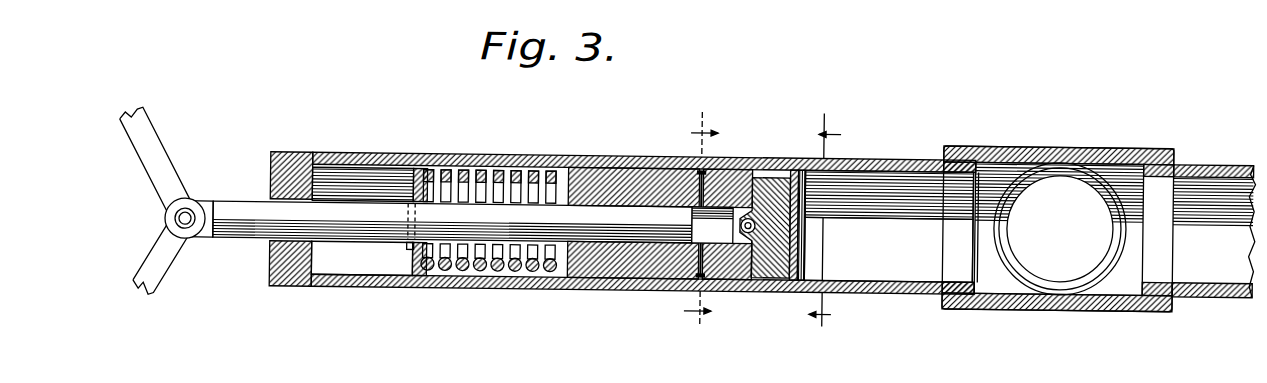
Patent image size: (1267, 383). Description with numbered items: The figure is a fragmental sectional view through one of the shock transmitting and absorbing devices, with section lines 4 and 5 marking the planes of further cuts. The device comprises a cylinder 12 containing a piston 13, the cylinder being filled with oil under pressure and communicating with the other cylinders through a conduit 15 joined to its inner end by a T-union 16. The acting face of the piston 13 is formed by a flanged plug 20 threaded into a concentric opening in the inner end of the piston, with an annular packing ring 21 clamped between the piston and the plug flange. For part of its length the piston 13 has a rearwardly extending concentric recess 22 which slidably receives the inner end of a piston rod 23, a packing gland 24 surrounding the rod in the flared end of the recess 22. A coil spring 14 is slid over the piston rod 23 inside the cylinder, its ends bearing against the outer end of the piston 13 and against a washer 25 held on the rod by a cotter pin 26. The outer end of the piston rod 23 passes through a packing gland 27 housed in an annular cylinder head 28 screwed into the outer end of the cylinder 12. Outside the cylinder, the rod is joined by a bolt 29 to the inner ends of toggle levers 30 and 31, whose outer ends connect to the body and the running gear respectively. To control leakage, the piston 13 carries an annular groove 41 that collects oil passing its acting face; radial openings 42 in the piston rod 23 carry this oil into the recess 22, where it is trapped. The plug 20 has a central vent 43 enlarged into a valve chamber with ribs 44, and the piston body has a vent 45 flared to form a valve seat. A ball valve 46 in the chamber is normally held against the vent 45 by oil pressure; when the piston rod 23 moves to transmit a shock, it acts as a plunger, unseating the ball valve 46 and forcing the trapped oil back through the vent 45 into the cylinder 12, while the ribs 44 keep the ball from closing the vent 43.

The section line 4- 4 is at (700, 217).
The section line 5- 5 is at (824, 219).
The cylinder 12 is at (557, 157).
The piston 13 is at (607, 273).
The coil spring 14 is at (497, 173).
The conduit 15 is at (1083, 180).
The T-union 16 is at (1065, 306).
The flanged plug 20 is at (802, 253).
The annular packing ring 21 is at (805, 229).
The concentric recess 22 is at (748, 168).
The piston rod 23 is at (535, 230).
The packing gland 24 is at (632, 168).
The washer 25 is at (423, 175).
The cotter pin 26 is at (407, 254).
The packing gland 27 is at (270, 185).
The annular cylinder head 28 is at (309, 173).
The bolt 29 is at (197, 238).
The toggle lever 30 is at (157, 165).
The toggle lever 31 is at (156, 282).
The annular groove 41 is at (685, 283).
The radial opening 42 is at (693, 185).
The vent 43 is at (823, 177).
The rib 44 is at (780, 170).
The vent 45 is at (748, 233).
The ball valve 46 is at (754, 264).